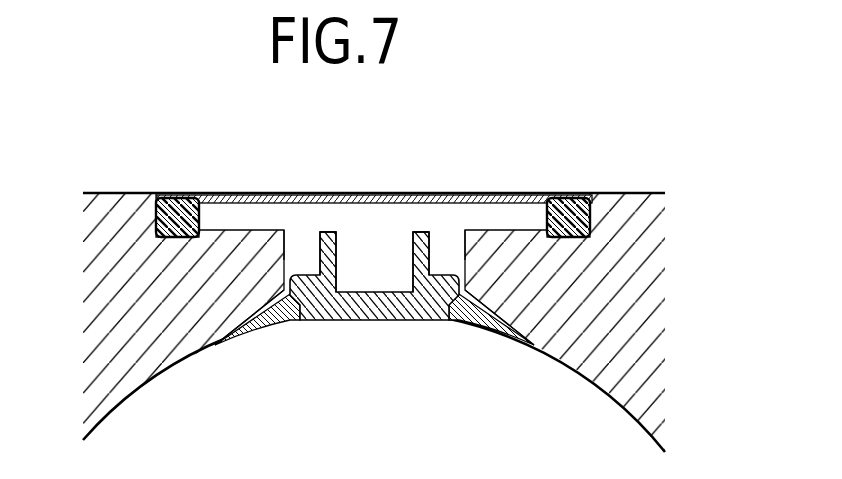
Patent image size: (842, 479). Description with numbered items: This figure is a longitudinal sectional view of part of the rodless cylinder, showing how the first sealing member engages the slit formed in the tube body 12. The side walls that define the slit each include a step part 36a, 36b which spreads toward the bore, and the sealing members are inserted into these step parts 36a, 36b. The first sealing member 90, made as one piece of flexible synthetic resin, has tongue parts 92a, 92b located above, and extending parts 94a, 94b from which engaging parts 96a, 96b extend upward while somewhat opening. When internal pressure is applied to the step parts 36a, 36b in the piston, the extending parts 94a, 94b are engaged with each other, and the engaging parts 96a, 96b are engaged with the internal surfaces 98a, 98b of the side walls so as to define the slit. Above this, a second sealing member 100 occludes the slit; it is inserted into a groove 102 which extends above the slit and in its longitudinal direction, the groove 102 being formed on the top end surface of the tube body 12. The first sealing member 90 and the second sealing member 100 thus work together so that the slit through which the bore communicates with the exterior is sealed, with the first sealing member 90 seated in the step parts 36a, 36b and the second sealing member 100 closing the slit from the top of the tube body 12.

The tube body 12 is at (610, 310).
The step part 36a is at (470, 293).
The step part 36b is at (290, 280).
The first sealing member 90 is at (375, 325).
The tongue part 92a is at (470, 330).
The tongue part 92b is at (277, 327).
The extending part 94a is at (447, 262).
The extending part 94b is at (312, 248).
The engaging part 96a is at (421, 235).
The engaging part 96b is at (328, 236).
The internal surface 98a is at (434, 235).
The internal surface 98b is at (298, 232).
The second sealing member 100 is at (533, 194).
The groove 102 is at (167, 238).